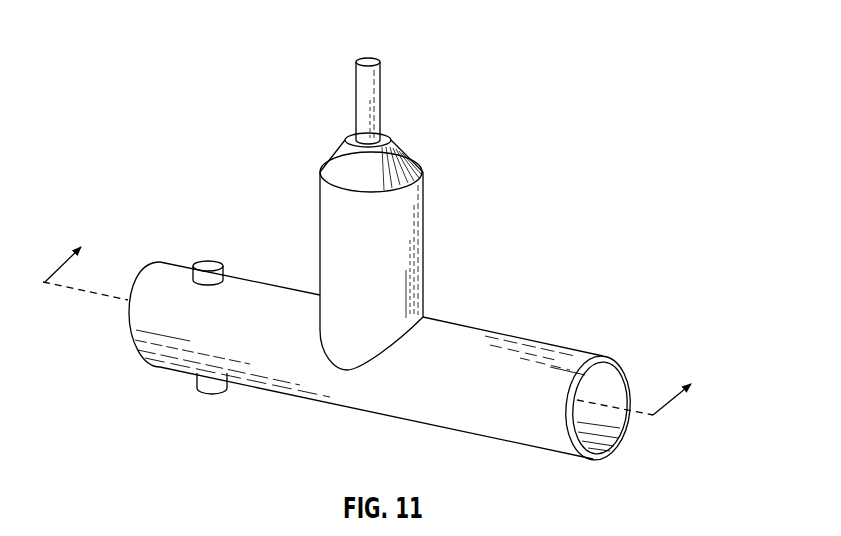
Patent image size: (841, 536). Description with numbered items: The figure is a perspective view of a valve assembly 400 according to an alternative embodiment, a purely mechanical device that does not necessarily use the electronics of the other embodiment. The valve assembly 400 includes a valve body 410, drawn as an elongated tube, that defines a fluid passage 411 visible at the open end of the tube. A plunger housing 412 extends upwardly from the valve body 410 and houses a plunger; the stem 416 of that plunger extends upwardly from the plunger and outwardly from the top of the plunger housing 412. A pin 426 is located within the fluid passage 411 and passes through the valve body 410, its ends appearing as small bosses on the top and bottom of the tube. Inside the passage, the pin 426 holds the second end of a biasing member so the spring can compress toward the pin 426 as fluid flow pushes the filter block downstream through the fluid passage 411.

The valve assembly 400 is at (135, 43).
The valve body 410 is at (507, 332).
The fluid passage 411 is at (603, 450).
The plunger housing 412 is at (423, 215).
The stem 416 is at (356, 92).
The pin 426 is at (208, 263).